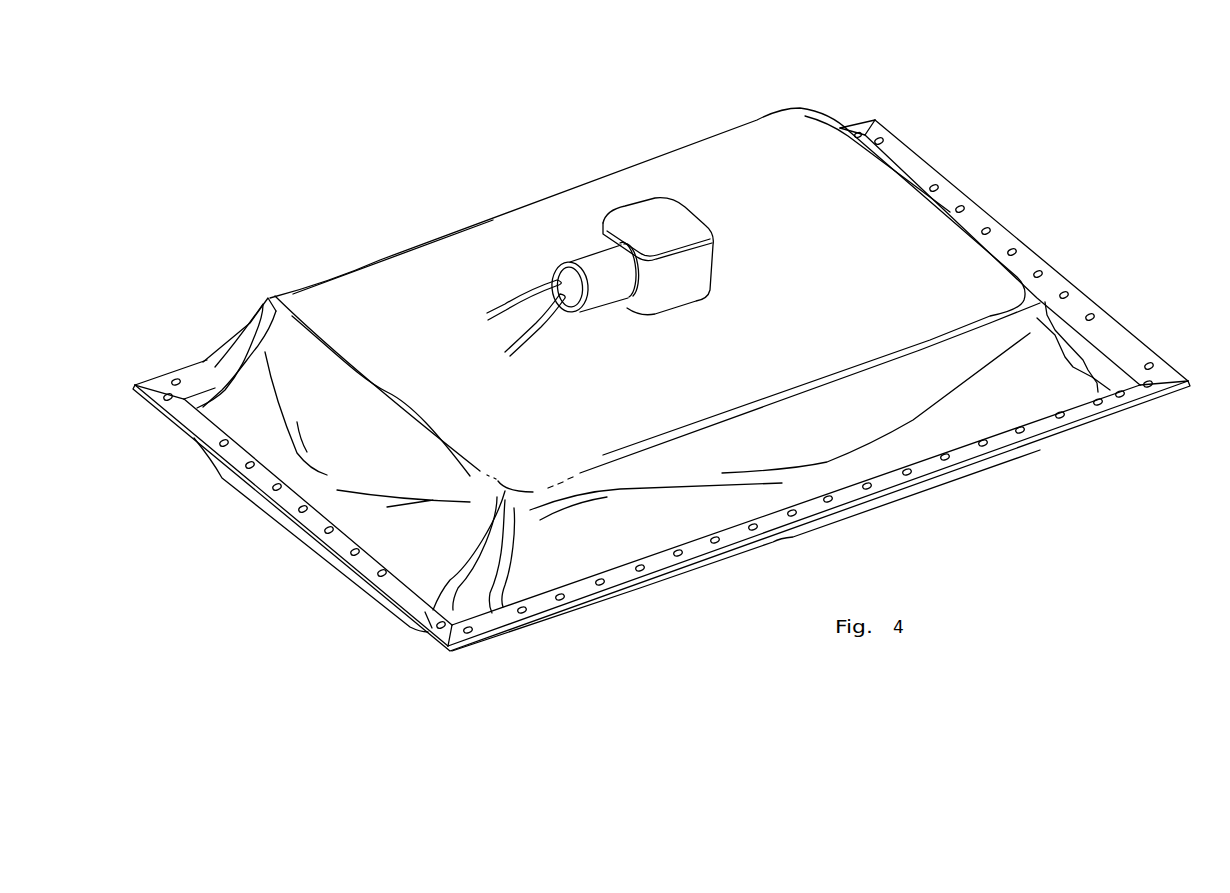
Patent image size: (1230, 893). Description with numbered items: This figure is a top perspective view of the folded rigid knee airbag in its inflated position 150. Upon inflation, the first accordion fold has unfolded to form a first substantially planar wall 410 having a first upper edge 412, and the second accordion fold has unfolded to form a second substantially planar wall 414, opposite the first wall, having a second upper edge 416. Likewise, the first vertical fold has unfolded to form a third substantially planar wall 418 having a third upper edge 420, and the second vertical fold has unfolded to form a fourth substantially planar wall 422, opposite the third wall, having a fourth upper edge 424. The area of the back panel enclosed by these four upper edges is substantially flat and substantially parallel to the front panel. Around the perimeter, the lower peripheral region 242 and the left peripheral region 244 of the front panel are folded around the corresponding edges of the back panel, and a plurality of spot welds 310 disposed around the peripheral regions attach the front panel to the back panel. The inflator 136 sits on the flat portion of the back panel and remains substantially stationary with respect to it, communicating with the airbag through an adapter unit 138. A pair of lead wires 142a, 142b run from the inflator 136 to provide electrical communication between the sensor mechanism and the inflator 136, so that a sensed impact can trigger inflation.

The inflated position 150 is at (1022, 88).
The first substantially planar wall 410 is at (338, 208).
The first upper edge 412 is at (687, 150).
The third upper edge 420 is at (333, 352).
The fourth substantially planar wall 422 is at (1092, 217).
The fourth upper edge 424 is at (945, 202).
The second substantially planar wall 414 is at (1043, 417).
The left peripheral region 244 is at (287, 510).
The second upper edge 416 is at (1075, 315).
The third substantially planar wall 418 is at (217, 470).
The lower peripheral region 242 is at (895, 480).
The spot welds 310 is at (678, 555).
The inflator 136 is at (593, 253).
The adapter unit 138 is at (760, 282).
The lead wire 142a is at (533, 330).
The lead wire 142b is at (518, 303).